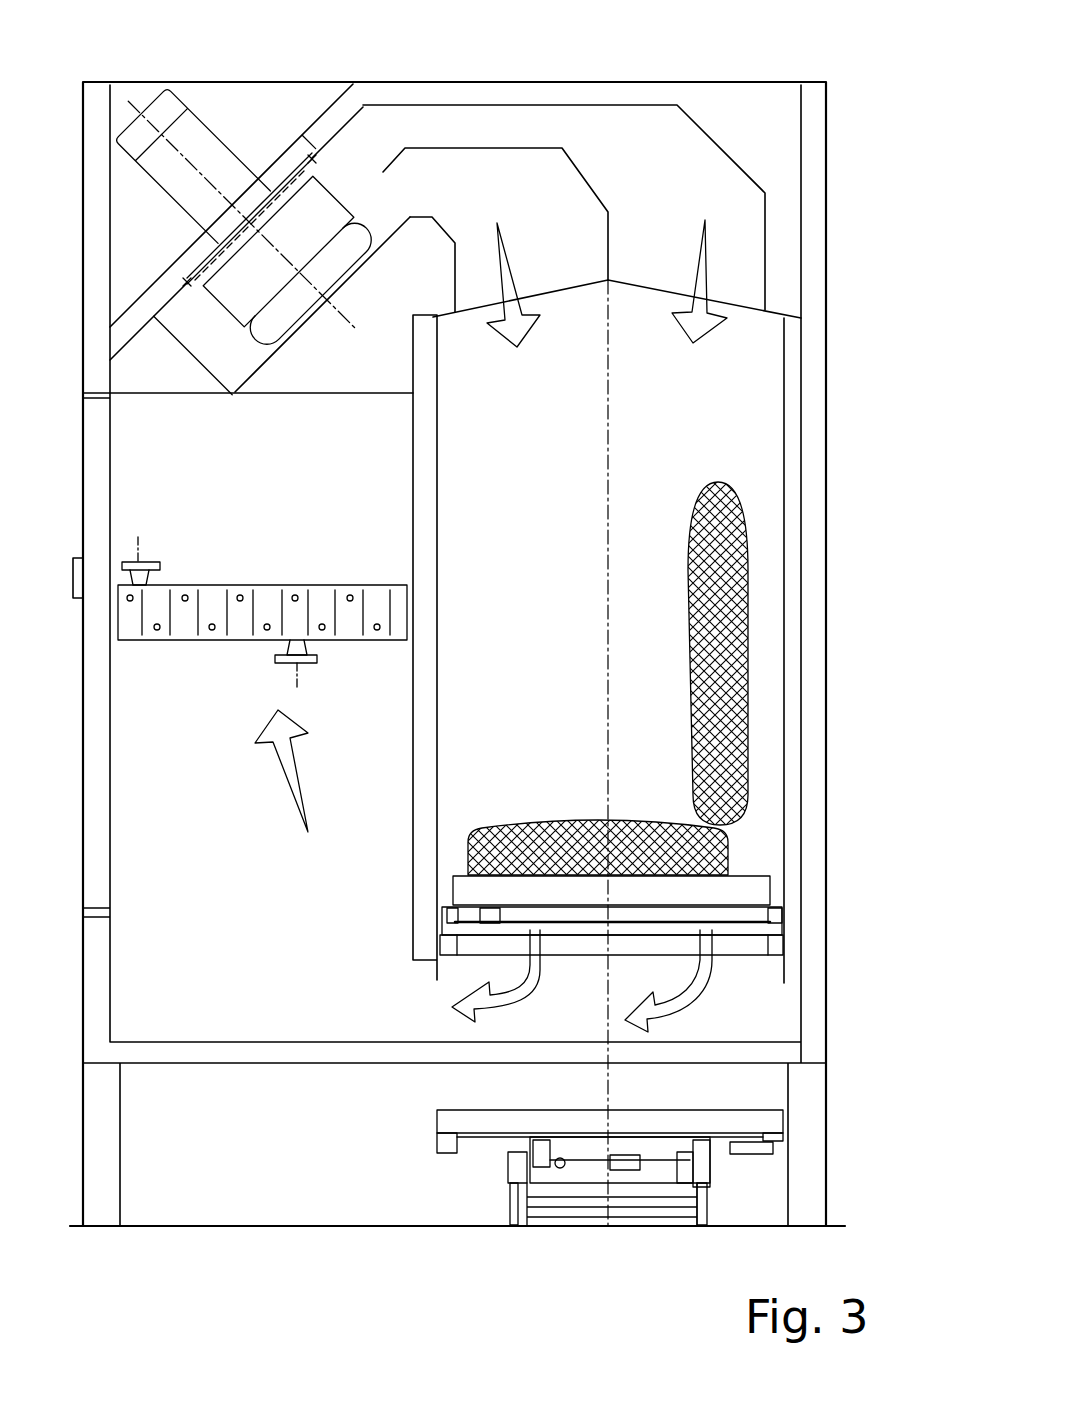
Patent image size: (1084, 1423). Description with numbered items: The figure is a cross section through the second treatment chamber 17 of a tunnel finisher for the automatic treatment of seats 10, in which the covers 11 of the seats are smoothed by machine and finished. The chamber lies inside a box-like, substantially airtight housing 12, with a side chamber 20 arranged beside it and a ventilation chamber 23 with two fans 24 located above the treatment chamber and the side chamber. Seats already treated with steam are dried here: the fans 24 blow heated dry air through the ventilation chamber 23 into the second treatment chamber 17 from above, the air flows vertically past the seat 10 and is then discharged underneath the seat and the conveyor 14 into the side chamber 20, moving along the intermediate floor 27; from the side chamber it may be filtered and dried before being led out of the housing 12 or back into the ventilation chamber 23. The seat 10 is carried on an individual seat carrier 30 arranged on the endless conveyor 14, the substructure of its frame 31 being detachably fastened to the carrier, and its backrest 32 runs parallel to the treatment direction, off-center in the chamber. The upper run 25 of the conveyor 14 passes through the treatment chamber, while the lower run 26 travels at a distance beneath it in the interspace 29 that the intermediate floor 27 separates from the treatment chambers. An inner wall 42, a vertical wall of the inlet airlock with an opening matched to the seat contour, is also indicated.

The seat 10 is at (758, 825).
The cover 11 is at (747, 640).
The housing 12 is at (830, 420).
The conveyor 14 is at (750, 947).
The second treatment chamber 17 is at (703, 410).
The side chamber 20 is at (272, 488).
The ventilation chamber 23 is at (313, 217).
The fan 24 is at (531, 203).
The upper run 25 is at (740, 942).
The lower run 26 is at (495, 1137).
The intermediate floor 27 is at (280, 1053).
The interspace 29 is at (195, 1142).
The seat carrier 30 is at (750, 893).
The frame 31 is at (702, 896).
The backrest 32 is at (748, 590).
The inner wall 42 is at (540, 555).